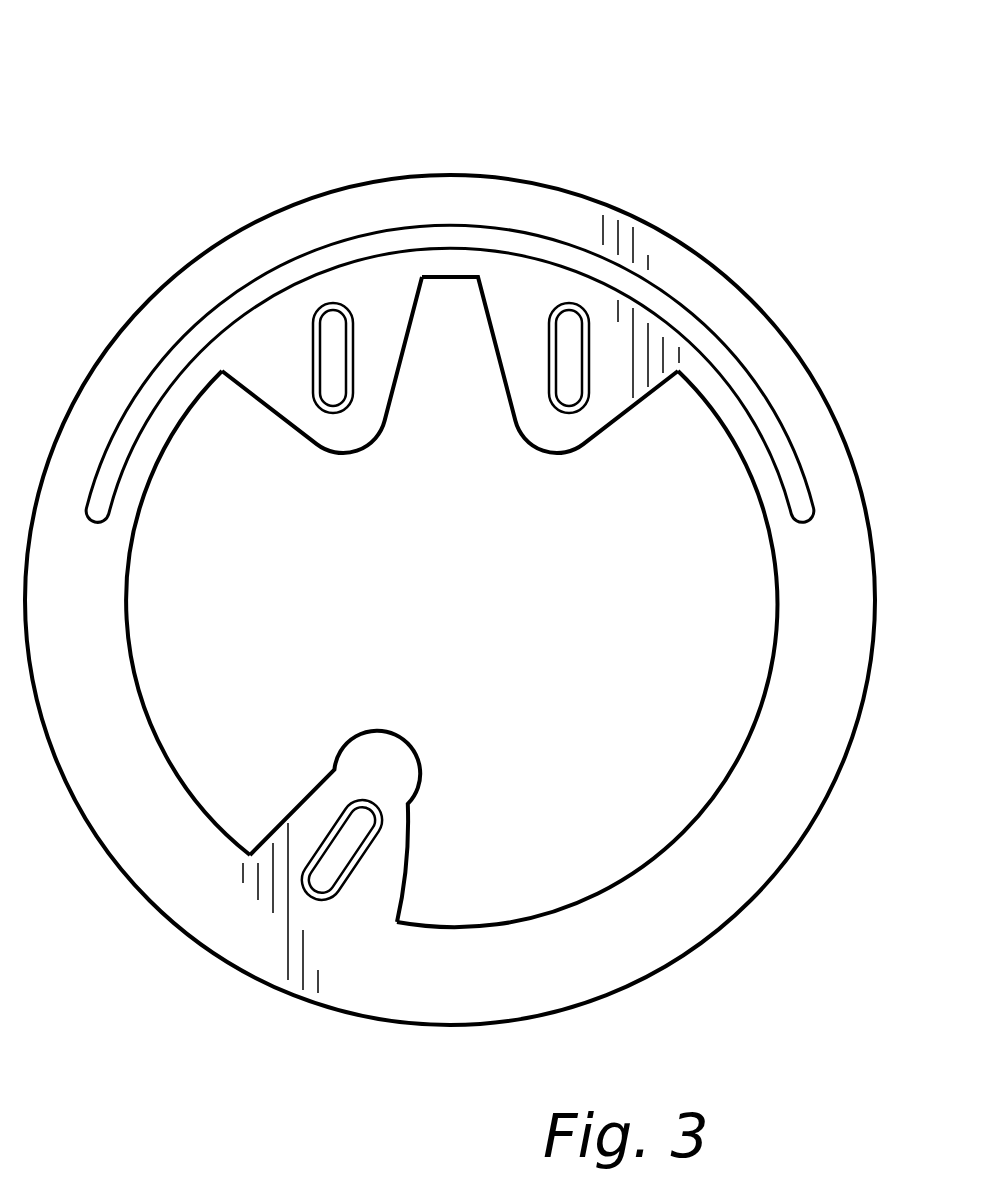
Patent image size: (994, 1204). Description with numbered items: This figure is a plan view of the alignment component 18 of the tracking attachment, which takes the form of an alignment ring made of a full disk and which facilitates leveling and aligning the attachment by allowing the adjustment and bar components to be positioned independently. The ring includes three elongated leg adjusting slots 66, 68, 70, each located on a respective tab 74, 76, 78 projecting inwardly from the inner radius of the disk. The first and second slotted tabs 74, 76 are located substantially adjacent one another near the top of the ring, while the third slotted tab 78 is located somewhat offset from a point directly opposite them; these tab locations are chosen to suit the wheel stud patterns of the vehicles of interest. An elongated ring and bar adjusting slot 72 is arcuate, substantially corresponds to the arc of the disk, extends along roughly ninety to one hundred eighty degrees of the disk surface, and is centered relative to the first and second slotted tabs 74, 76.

The alignment component 18 is at (723, 128).
The elongated leg adjusting slot 66 is at (328, 396).
The elongated leg adjusting slot 68 is at (573, 405).
The elongated leg adjusting slot 70 is at (345, 832).
The elongated ring and bar adjusting slot 72 is at (727, 357).
The first slotted tab 74 is at (362, 435).
The second slotted tab 76 is at (530, 428).
The third slotted tab 78 is at (400, 795).